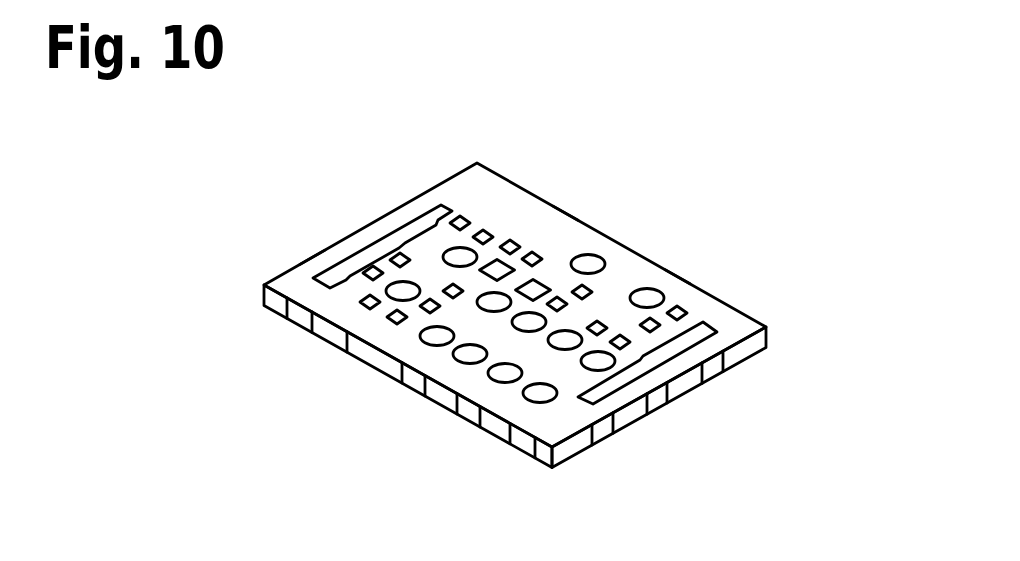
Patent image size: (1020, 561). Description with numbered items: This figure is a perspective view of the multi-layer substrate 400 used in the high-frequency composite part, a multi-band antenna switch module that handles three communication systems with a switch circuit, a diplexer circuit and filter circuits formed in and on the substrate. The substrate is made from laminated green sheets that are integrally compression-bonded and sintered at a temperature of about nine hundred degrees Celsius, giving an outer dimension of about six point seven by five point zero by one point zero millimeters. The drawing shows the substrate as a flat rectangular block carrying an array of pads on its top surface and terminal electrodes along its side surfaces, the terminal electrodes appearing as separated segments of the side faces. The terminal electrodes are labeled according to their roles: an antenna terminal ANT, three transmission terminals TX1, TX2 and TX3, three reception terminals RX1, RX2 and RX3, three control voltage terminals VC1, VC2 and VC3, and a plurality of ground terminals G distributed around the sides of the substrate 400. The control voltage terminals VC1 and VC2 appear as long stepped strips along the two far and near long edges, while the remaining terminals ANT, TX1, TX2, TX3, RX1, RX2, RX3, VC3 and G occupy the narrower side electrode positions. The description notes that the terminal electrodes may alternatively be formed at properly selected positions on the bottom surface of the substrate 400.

The antenna module 400 is at (572, 315).
The first control voltage terminal VC1 is at (382, 215).
The second control voltage terminal VC2 is at (685, 378).
The third control voltage terminal VC3 is at (705, 250).
The antenna terminal ANT is at (592, 187).
The first transmission terminal TX1 is at (312, 367).
The second transmission terminal TX2 is at (298, 374).
The third transmission terminal TX3 is at (281, 234).
The first reception terminal RX1 is at (481, 461).
The second reception terminal RX2 is at (426, 430).
The third reception terminal RX3 is at (644, 456).
The ground terminal G is at (511, 292).